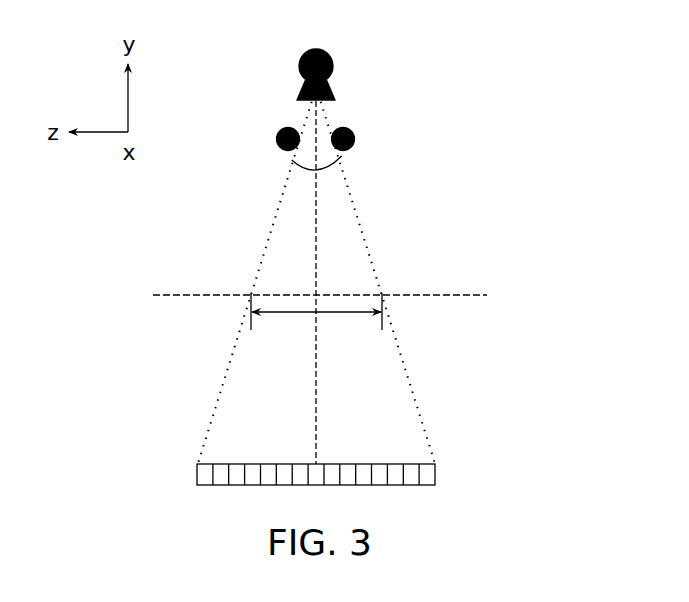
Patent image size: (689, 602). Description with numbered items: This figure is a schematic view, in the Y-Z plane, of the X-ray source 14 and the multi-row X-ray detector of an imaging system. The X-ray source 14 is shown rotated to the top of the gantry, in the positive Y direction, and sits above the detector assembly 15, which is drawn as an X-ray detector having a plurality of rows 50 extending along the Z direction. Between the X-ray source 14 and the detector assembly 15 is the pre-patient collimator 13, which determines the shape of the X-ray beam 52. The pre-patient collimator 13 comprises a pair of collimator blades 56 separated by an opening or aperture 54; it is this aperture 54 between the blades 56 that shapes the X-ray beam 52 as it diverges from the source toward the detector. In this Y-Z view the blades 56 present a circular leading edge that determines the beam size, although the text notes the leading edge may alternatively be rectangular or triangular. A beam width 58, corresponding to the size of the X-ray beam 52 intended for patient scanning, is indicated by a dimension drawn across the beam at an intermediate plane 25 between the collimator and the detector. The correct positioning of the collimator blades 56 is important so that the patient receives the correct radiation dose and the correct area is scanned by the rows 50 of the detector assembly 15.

The pre-patient collimator 13 is at (329, 127).
The X-ray source 14 is at (344, 70).
The detector assembly 15 is at (186, 477).
The object plane 25 is at (199, 294).
The rows 50 is at (319, 471).
The X-ray beam 52 is at (202, 420).
The opening or aperture 54 is at (312, 172).
The collimator blades 56 is at (356, 135).
The beam width 58 is at (343, 315).